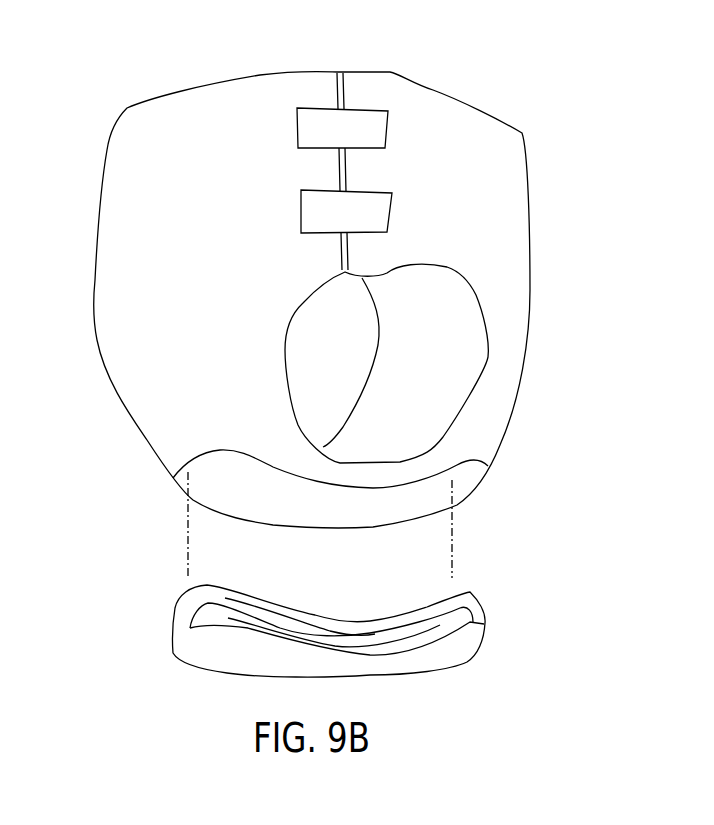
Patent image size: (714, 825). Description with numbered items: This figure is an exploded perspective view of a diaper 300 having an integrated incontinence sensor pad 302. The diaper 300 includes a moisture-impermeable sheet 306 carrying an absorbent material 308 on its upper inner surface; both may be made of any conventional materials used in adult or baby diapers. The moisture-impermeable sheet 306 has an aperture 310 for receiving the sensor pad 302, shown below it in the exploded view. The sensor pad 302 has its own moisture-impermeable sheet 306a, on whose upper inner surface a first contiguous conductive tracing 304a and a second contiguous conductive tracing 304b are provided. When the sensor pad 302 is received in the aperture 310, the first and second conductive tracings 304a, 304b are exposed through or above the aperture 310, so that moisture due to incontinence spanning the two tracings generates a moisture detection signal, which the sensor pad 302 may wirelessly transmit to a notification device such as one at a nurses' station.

The diaper 300 is at (297, 316).
The incontinence sensor pad 302 is at (279, 630).
The first contiguous conductive tracing 304a is at (303, 632).
The second contiguous conductive tracing 304b is at (407, 627).
The moisture-impermeable sheet 306 is at (132, 387).
The moisture-impermeable sheet 306a is at (180, 615).
The absorbent material 308 is at (427, 385).
The aperture 310 is at (210, 485).